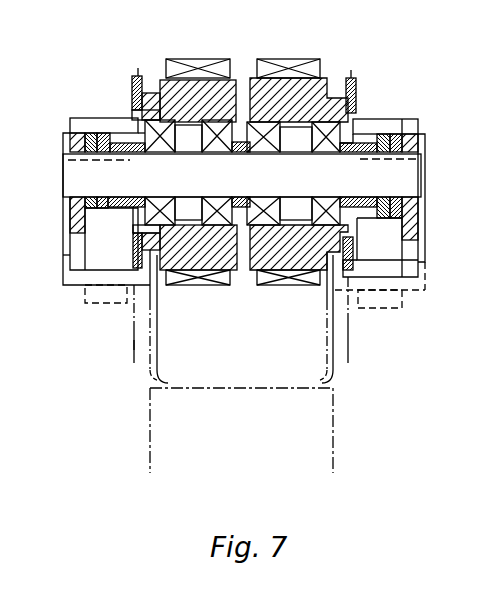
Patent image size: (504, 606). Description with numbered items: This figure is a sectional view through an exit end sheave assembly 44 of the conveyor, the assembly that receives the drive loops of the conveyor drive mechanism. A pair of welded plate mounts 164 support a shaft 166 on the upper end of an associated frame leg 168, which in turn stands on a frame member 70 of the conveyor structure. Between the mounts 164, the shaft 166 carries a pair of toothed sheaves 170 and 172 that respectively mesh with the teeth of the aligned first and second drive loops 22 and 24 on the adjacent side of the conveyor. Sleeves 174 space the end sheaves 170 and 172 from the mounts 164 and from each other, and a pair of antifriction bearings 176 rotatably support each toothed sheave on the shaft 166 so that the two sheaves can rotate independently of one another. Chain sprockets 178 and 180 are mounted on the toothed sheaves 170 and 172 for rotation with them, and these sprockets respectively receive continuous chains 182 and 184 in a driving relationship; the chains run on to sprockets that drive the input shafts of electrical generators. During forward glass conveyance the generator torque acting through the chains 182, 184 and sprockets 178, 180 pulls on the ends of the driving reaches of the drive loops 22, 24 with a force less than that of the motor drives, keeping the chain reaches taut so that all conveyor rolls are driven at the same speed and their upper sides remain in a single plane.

The first drive loop 22 is at (319, 58).
The second drive loop 24 is at (232, 58).
The exit end sheave assembly 44 is at (126, 348).
The frame member 70 is at (150, 380).
The welded plate mount 164 is at (68, 133).
The shaft 166 is at (243, 200).
The frame leg 168 is at (333, 448).
The toothed sheave 170 is at (328, 98).
The toothed sheave 172 is at (165, 80).
The sleeve 174 is at (242, 143).
The antifriction bearing 176 is at (212, 148).
The chain sprocket 178 is at (355, 88).
The chain sprocket 180 is at (129, 76).
The continuous chain 182 is at (349, 350).
The continuous chain 184 is at (125, 338).